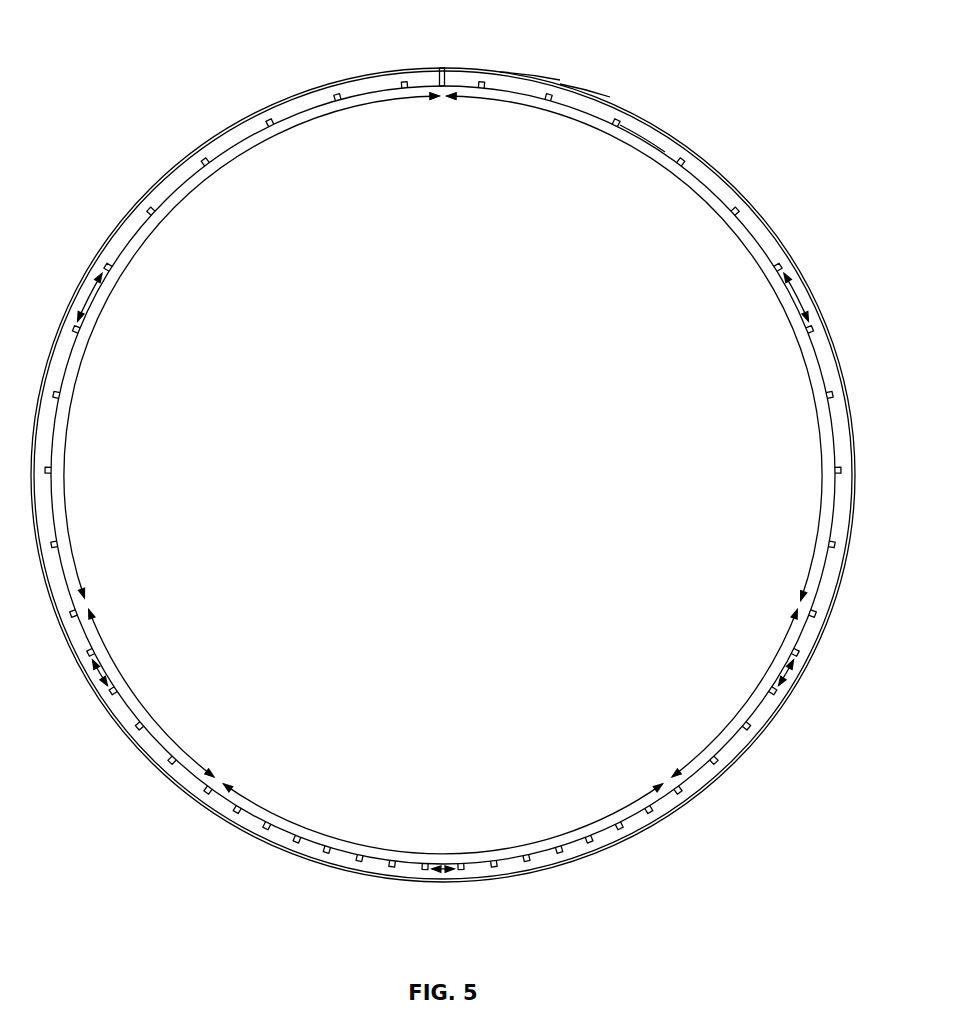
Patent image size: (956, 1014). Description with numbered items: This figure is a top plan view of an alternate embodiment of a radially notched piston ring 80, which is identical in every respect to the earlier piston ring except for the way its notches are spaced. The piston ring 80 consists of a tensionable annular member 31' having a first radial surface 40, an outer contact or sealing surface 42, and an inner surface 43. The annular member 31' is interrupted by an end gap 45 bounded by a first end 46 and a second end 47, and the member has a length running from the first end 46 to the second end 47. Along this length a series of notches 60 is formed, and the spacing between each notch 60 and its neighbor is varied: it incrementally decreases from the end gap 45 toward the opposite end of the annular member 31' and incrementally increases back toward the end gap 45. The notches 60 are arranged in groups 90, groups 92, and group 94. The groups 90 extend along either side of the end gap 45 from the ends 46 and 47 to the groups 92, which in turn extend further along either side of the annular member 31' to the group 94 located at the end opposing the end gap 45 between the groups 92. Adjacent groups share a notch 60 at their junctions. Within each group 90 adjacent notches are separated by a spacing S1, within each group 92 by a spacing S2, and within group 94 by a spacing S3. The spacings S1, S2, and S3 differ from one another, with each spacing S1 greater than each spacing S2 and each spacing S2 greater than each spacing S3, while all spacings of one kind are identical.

The annular member 31' is at (600, 70).
The first radial surface 40 is at (288, 108).
The outer contact or sealing surface 42 is at (527, 70).
The inner surface 43 is at (643, 140).
The end gap 45 is at (443, 66).
The first end 46 is at (446, 86).
The second end 47 is at (440, 86).
The notches 60 is at (212, 170).
The piston ring 80 is at (716, 164).
The groups of notches 90 is at (765, 270).
The groups of notches 92 is at (128, 685).
The group of notches 94 is at (448, 858).
The spacing S1 is at (798, 292).
The spacing S2 is at (100, 672).
The spacing S3 is at (443, 870).